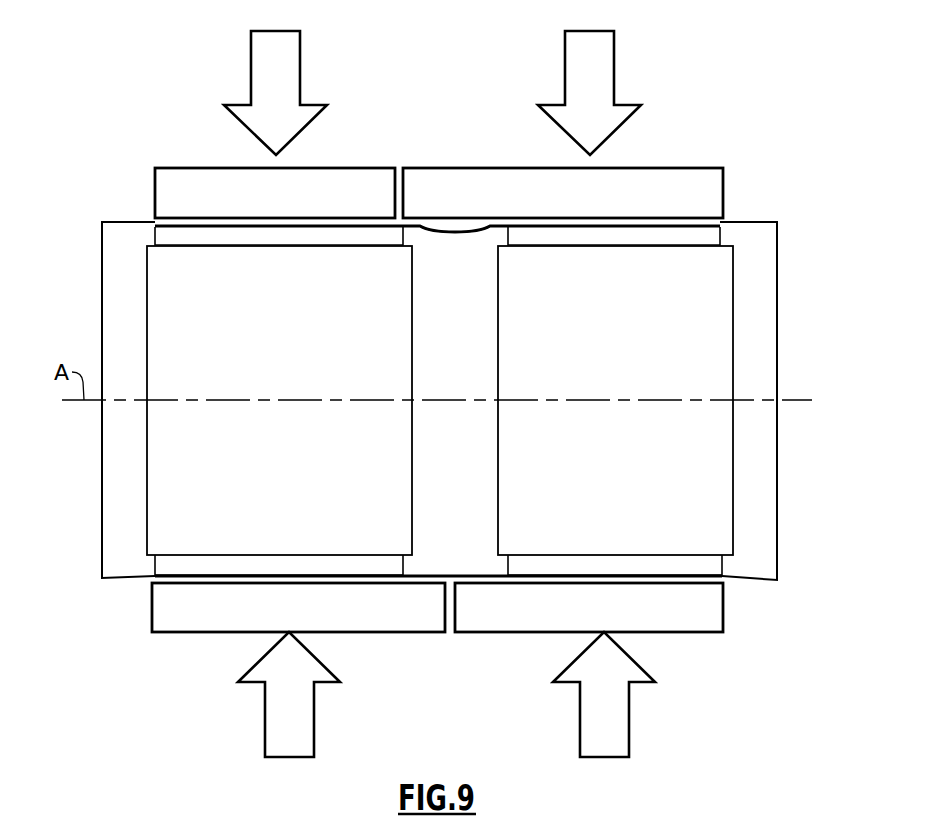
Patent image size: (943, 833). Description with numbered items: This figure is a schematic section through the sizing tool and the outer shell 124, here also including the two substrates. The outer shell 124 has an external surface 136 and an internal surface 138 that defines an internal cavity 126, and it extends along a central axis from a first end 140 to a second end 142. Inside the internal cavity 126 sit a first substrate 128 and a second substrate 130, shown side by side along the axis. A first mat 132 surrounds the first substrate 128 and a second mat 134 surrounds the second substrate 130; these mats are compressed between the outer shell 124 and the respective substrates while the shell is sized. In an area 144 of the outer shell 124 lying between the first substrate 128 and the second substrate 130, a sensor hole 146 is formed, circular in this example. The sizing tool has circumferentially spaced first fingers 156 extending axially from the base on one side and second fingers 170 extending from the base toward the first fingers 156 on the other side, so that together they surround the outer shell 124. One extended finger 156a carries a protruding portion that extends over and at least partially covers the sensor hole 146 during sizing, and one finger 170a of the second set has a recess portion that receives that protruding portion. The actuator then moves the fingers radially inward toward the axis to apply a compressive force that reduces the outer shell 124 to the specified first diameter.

The outer shell 124 is at (725, 227).
The internal cavity 126 is at (750, 441).
The first substrate 128 is at (725, 508).
The second substrate 130 is at (152, 508).
The first mat 132 is at (712, 238).
The second mat 134 is at (165, 233).
The external surface 136 is at (133, 580).
The internal surface 138 is at (102, 229).
The first end 140 is at (777, 272).
The second end 142 is at (102, 272).
The area 144 is at (468, 231).
The sensor hole 146 is at (443, 231).
The first fingers 156 is at (720, 612).
The extended finger 156a is at (663, 182).
The second fingers 170 is at (390, 618).
The recessed finger 170a is at (317, 182).